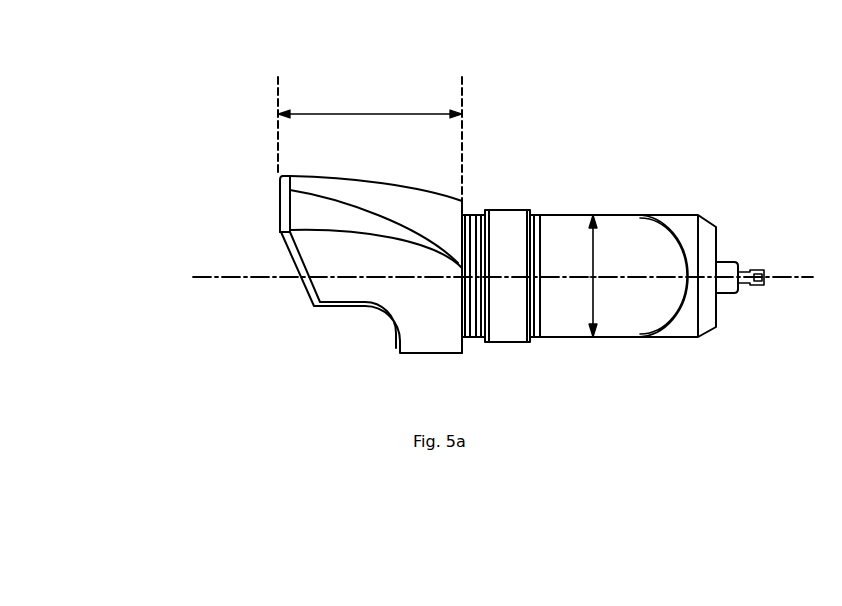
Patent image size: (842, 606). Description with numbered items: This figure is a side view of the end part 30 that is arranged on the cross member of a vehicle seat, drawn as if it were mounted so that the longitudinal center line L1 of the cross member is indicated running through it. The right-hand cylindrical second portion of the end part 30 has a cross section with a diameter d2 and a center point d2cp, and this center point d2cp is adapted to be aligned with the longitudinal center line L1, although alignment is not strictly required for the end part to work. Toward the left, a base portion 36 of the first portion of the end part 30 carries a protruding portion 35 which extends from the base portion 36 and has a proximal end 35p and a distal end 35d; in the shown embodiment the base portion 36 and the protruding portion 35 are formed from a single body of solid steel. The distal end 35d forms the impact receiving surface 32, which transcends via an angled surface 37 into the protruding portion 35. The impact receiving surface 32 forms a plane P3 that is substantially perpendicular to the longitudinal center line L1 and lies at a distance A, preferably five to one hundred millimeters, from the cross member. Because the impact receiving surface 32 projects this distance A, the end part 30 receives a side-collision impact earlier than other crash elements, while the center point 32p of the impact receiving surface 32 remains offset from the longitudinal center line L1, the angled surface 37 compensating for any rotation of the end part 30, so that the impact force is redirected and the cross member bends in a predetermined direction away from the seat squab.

The end part 30 is at (565, 338).
The impact receiving surface 32 is at (247, 177).
The center point of the impact receiving surface 32p is at (280, 211).
The protruding portion 35 is at (350, 267).
The distal end 35d is at (280, 232).
The proximal end 35p is at (387, 322).
The base portion 36 is at (432, 343).
The angled surface 37 is at (291, 279).
The plane P3 is at (273, 111).
The distance A is at (370, 138).
The longitudinal center axis L1 is at (215, 279).
The diameter d2 is at (593, 247).
The center point d2cp is at (593, 277).